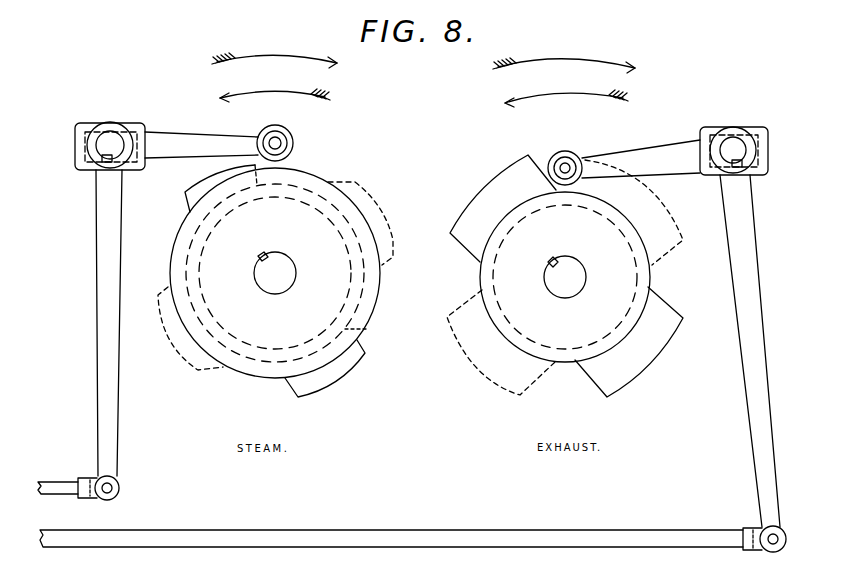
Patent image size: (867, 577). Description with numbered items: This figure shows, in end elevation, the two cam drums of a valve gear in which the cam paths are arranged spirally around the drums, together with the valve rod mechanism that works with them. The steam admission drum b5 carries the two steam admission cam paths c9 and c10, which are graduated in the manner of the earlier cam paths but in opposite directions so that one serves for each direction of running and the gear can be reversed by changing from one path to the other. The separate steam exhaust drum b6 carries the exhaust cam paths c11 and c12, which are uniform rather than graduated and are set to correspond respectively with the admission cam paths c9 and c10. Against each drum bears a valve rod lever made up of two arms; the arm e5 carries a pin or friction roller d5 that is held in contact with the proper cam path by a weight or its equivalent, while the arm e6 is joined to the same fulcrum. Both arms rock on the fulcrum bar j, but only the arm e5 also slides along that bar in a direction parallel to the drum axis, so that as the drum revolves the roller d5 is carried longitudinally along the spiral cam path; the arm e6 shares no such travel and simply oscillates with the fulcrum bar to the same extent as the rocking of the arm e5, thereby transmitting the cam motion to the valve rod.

The drum b5 is at (275, 273).
The drum b6 is at (565, 277).
The steam admission cam path c9 is at (275, 280).
The steam admission cam path c10 is at (275, 276).
The steam exhaust cam path c11 is at (566, 276).
The steam exhaust cam path c12 is at (565, 277).
The friction roller d5 is at (293, 142).
The lever arm e5 is at (170, 140).
The lever arm e6 is at (107, 352).
The fulcrum bar j is at (85, 162).